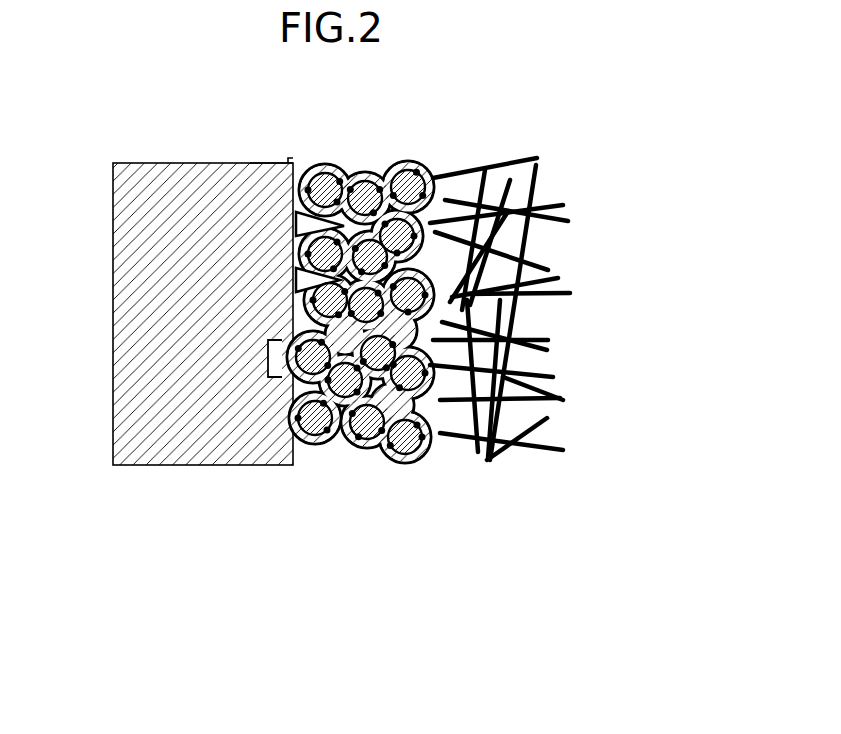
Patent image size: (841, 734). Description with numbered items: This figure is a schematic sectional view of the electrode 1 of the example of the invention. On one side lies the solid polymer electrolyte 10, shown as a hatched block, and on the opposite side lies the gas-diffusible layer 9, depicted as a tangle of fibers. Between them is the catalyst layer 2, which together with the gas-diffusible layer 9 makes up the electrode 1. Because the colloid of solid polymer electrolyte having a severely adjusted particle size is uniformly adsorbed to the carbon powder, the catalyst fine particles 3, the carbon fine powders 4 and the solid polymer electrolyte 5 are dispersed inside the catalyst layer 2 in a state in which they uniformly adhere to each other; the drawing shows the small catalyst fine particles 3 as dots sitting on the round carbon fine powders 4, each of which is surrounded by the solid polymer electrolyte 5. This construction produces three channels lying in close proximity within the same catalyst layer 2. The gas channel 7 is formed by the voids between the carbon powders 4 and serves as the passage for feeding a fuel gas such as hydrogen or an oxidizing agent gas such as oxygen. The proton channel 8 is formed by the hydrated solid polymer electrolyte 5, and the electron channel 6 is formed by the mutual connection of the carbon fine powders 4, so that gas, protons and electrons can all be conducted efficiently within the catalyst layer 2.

The electrode 1 is at (293, 550).
The catalyst layer 2 is at (252, 318).
The catalyst fine particles 3 is at (362, 176).
The carbon fine powders 4 is at (380, 172).
The solid polymer electrolyte 5 is at (306, 172).
The electron channel 6 is at (268, 362).
The gas channel 7 is at (298, 222).
The proton channel 8 is at (298, 272).
The gas-diffusible layer 9 is at (436, 486).
The solid polymer electrolyte 10 is at (115, 486).